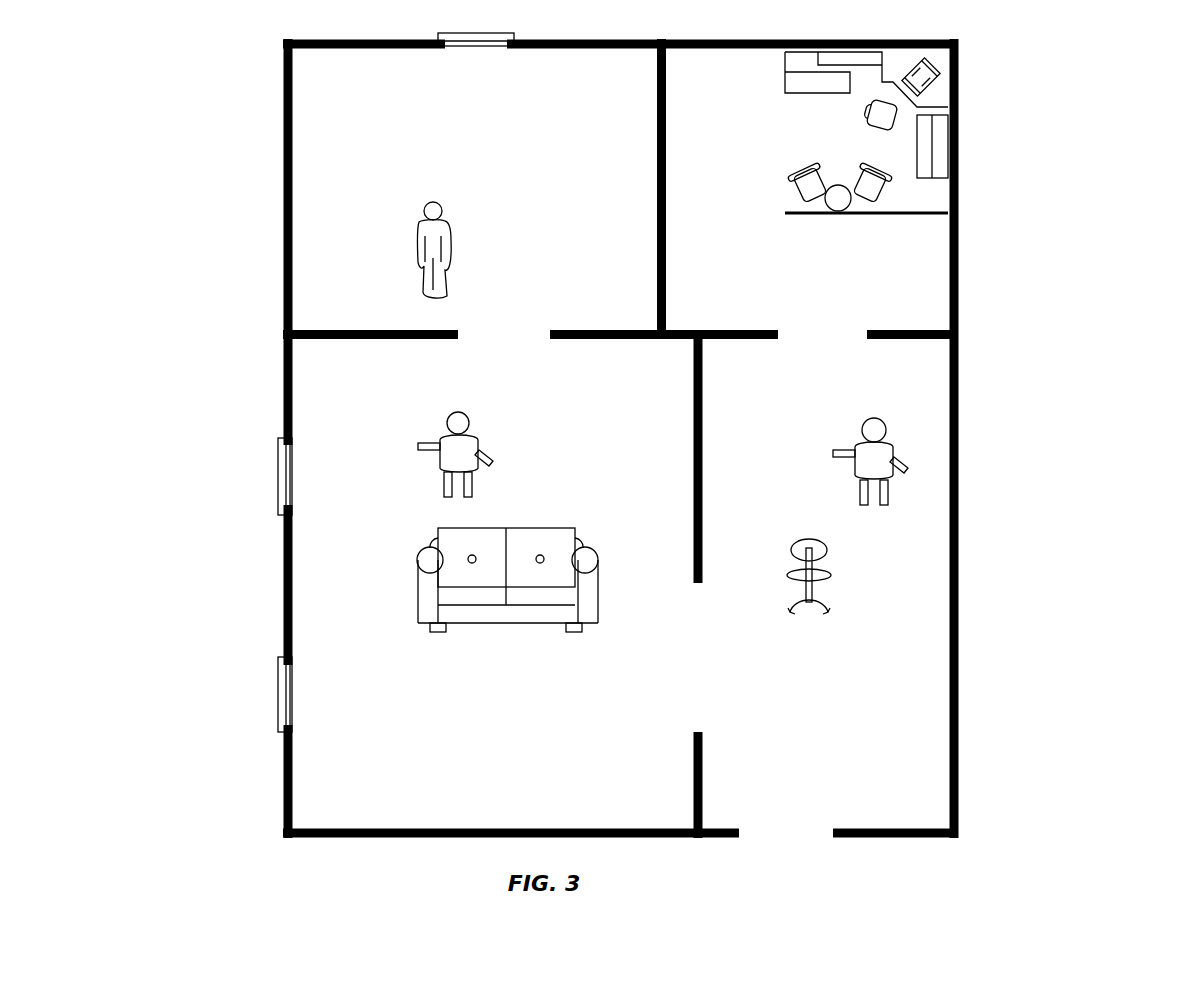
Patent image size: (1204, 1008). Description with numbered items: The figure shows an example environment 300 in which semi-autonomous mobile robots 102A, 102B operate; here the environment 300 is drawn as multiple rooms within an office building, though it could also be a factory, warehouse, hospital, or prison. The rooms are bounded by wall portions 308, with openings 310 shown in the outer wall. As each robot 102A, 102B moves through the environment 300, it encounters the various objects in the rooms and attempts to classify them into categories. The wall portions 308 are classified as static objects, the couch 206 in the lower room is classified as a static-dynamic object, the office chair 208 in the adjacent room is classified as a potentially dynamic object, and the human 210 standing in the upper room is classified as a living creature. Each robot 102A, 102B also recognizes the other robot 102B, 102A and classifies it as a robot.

The environment 300 is at (1106, 60).
The wall portions 308 is at (340, 48).
The door 310 is at (278, 470).
The human 210 is at (433, 200).
The semi-autonomous mobile robot 102A is at (460, 410).
The semi-autonomous mobile robot 102B is at (874, 417).
The couch 206 is at (498, 626).
The office chair 208 is at (812, 607).